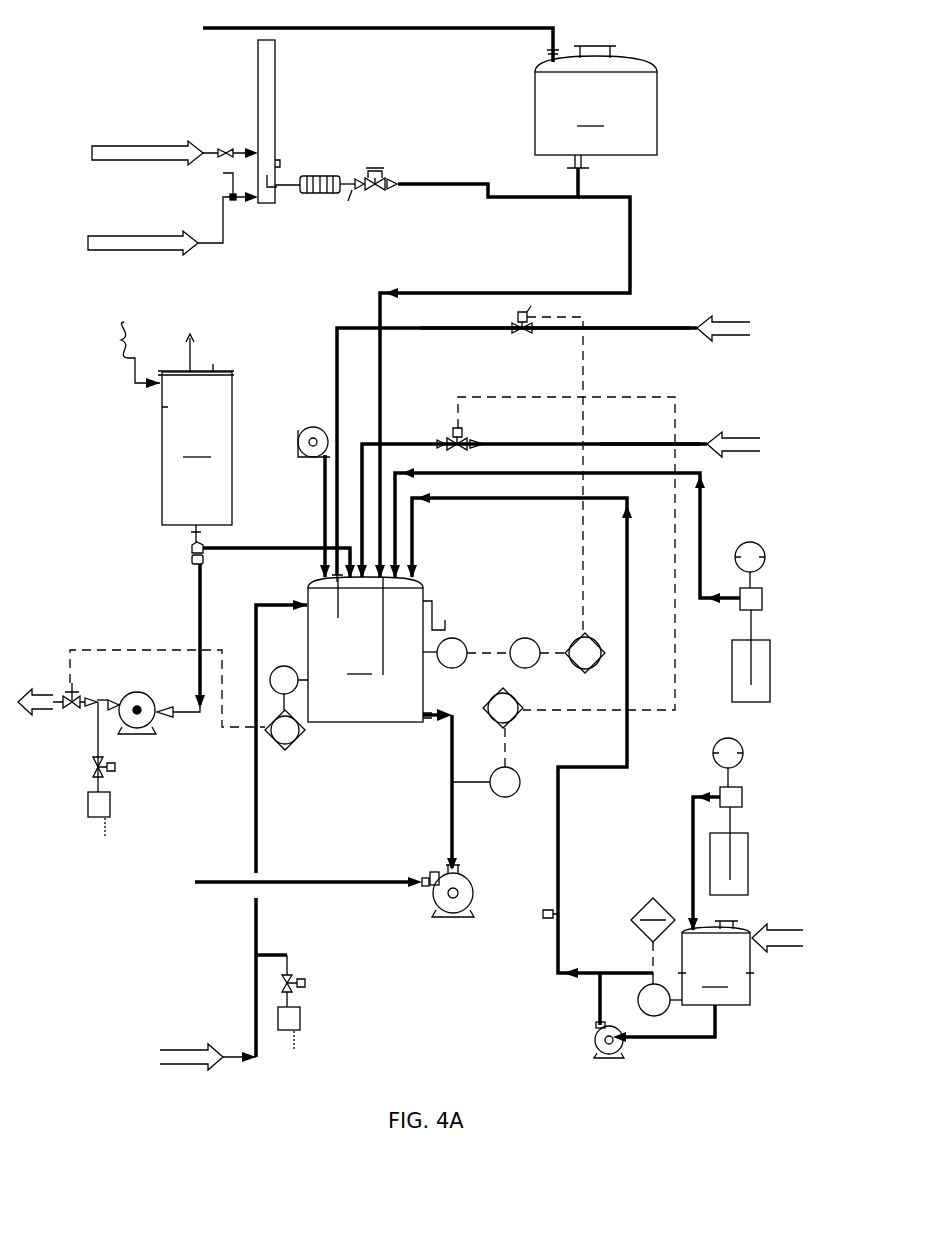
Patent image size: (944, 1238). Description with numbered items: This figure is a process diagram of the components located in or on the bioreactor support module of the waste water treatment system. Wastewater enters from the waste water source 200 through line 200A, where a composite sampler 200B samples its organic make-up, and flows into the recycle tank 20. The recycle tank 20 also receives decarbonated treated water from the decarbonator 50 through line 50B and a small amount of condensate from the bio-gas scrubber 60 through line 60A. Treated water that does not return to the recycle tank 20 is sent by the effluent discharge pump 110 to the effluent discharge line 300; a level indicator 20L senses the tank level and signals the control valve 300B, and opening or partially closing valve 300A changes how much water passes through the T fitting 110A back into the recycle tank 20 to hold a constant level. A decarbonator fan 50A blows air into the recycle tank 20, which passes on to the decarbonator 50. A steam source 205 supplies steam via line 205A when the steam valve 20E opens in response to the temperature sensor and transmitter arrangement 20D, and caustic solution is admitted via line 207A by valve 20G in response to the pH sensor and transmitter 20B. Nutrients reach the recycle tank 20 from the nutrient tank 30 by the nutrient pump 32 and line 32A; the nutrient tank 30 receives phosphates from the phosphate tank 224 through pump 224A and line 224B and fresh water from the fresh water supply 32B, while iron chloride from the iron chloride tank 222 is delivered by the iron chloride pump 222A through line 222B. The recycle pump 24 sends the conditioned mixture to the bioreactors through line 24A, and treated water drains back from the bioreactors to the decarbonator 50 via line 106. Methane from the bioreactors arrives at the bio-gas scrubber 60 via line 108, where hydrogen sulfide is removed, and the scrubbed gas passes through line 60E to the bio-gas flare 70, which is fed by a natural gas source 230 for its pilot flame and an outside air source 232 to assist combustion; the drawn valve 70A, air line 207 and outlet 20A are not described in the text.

The line 108 is at (197, 12).
The bio-gas flare 70 is at (277, 108).
The control valve 70A is at (370, 170).
The bio-gas scrubber 60 is at (596, 107).
The line 60E is at (466, 198).
The line 60A is at (632, 257).
The natural gas source 230 is at (175, 141).
The outside air source 232 is at (173, 214).
The line 106 is at (116, 355).
The decarbonator 50 is at (196, 438).
The decarbonator fan 50A is at (316, 427).
The line 50B is at (232, 550).
The T fitting 110A is at (190, 553).
The effluent discharge pump 110 is at (128, 693).
The effluent discharge line 300 is at (139, 688).
The valve 300A is at (72, 710).
The control valve 300B is at (110, 806).
The recycle tank 20 is at (376, 649).
The level indicator 20L is at (292, 748).
The tank outlet line 20A is at (452, 745).
The pH sensor and transmitter 20B is at (513, 722).
The temperature sensor and transmitter arrangement 20D is at (580, 637).
The steam valve 20E is at (521, 336).
The valve 20G is at (455, 427).
The steam source 205 is at (549, 449).
The line 205A is at (420, 332).
The air supply 207 is at (562, 505).
The line 207A is at (600, 443).
The line 222B is at (497, 473).
The iron chloride pump 222A is at (745, 610).
The iron chloride tank 222 is at (732, 683).
The line 32A is at (492, 498).
The pump 224A is at (720, 788).
The line 224B is at (693, 838).
The phosphate tank 224 is at (710, 877).
The nutrient tank 30 is at (692, 957).
The fresh water supply 32B is at (780, 955).
The nutrient pump 32 is at (600, 1034).
The recycle pump 24 is at (470, 880).
The line 24A is at (196, 867).
The line 200A is at (256, 925).
The composite sampler 200B is at (300, 1020).
The waste water source 200 is at (187, 1058).